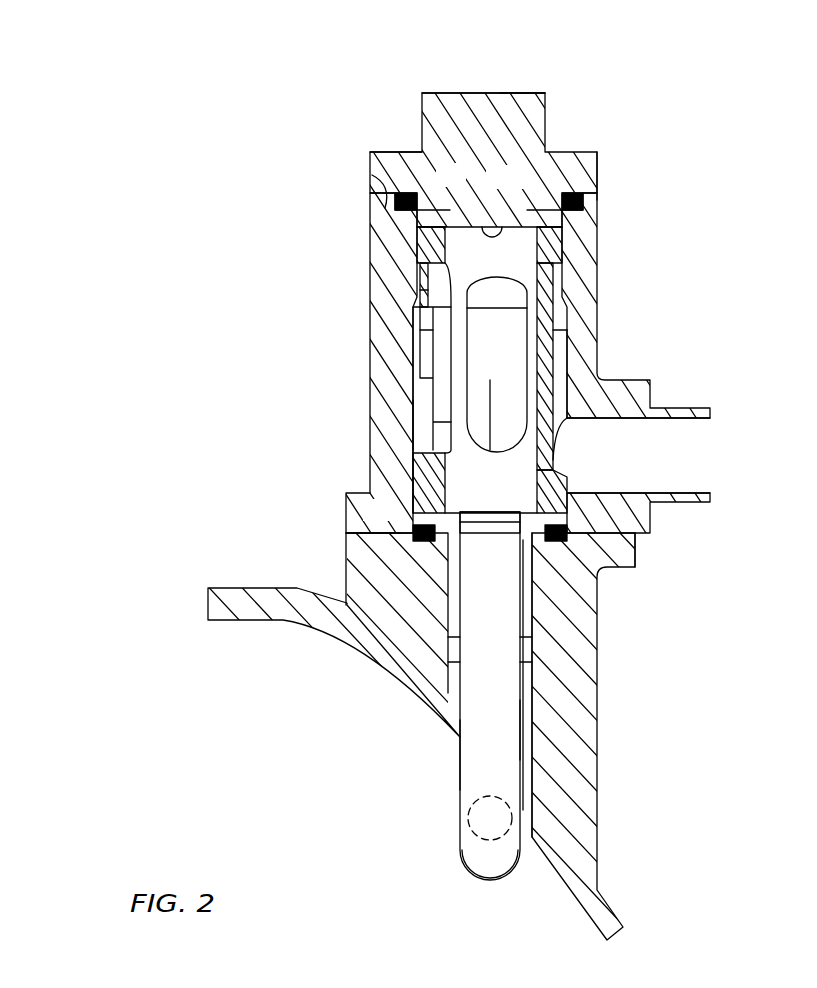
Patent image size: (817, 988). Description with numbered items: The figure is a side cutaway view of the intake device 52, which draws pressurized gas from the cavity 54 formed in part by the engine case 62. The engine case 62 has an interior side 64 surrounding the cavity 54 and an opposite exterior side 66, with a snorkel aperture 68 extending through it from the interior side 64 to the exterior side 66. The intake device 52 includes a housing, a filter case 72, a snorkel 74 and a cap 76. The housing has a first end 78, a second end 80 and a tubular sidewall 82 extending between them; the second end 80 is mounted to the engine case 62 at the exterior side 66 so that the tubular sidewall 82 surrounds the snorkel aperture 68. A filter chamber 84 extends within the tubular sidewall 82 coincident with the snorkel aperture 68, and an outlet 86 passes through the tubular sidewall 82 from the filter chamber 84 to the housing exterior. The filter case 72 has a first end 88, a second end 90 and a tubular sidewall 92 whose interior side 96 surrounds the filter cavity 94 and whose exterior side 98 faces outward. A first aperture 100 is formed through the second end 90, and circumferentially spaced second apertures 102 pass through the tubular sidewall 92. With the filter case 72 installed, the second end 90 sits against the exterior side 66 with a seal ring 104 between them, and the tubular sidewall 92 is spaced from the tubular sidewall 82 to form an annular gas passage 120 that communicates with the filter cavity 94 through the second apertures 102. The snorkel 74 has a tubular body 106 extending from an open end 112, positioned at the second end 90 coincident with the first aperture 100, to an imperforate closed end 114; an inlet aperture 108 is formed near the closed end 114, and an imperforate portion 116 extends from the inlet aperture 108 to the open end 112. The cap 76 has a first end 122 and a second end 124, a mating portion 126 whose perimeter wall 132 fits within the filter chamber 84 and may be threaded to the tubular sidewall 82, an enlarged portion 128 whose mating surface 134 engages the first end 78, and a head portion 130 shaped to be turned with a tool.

The intake device 52 is at (709, 152).
The cavity 54 is at (284, 829).
The engine case 62 is at (608, 681).
The interior side 64 is at (370, 651).
The exterior side 66 is at (637, 533).
The snorkel aperture 68 is at (446, 591).
The filter case 72 is at (559, 345).
The snorkel 74 is at (534, 588).
The cap 76 is at (551, 111).
The first end 78 is at (390, 206).
The second end 80 is at (358, 549).
The tubular sidewall 82 is at (372, 331).
The filter chamber 84 is at (561, 372).
The outlet 86 is at (690, 456).
The first end 88 is at (432, 226).
The second end 90 is at (401, 517).
The tubular sidewall 92 is at (563, 241).
The filter cavity 94 is at (509, 400).
The interior side 96 is at (433, 271).
The exterior side 98 is at (418, 243).
The first aperture 100 is at (493, 504).
The second apertures 102 is at (429, 351).
The seal ring 104 is at (568, 521).
The tubular body 106 is at (522, 723).
The inlet aperture 108 is at (468, 818).
The open end 112 is at (478, 512).
The closed end 114 is at (487, 882).
The imperforate portion 116 is at (454, 753).
The gas passage 120 is at (412, 421).
The first end 122 is at (505, 93).
The second end 124 is at (503, 225).
The mating portion 126 is at (557, 205).
The enlarged portion 128 is at (367, 149).
The head portion 130 is at (451, 87).
The perimeter wall 132 is at (530, 206).
The mating surface 134 is at (372, 173).